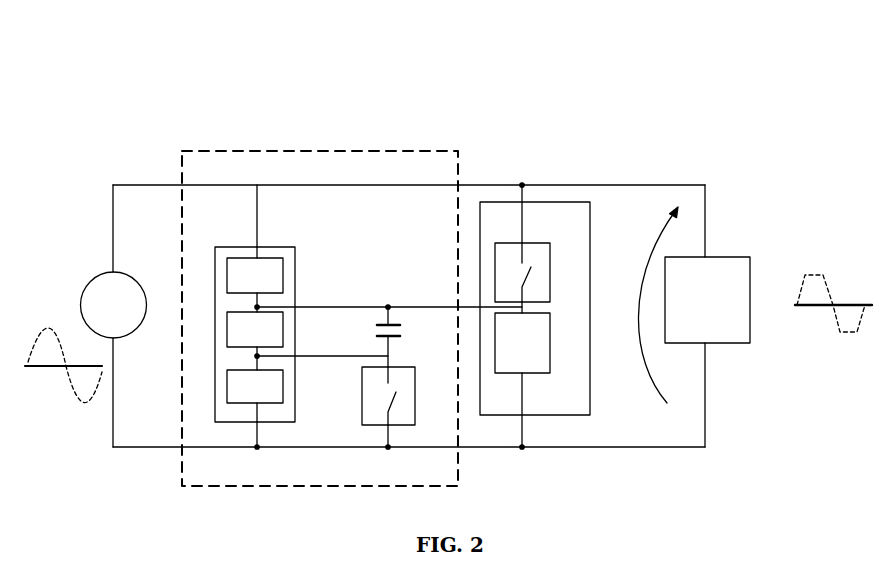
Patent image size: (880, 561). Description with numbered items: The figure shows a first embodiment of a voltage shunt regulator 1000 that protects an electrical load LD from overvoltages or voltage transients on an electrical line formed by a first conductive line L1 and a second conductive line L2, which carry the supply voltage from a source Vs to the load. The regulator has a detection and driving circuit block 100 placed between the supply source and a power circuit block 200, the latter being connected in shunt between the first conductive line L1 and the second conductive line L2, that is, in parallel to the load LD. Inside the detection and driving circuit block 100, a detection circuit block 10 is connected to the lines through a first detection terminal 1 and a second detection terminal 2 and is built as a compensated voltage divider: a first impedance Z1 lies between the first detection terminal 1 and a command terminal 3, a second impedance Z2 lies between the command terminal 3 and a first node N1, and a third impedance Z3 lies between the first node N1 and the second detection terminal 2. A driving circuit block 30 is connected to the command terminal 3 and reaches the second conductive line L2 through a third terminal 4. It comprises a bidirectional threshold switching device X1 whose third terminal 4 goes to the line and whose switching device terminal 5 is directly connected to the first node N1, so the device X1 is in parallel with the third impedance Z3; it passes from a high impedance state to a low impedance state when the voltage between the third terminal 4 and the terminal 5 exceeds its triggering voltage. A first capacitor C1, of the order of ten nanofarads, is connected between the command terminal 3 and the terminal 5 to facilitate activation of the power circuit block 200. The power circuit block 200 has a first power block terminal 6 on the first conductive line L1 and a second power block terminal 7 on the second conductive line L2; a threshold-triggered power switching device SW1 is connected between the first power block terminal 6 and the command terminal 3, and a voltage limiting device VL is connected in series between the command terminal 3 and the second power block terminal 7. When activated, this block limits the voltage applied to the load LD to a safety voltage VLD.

The voltage shunt regulator 1000 is at (546, 90).
The detection and driving circuit block 100 is at (247, 148).
The power circuit block 200 is at (592, 237).
The first detection terminal 1 is at (258, 197).
The second detection terminal 2 is at (260, 432).
The command terminal 3 is at (468, 306).
The third terminal 4 is at (390, 450).
The switching device terminal 5 is at (395, 357).
The first power block terminal 6 is at (524, 194).
The second power block terminal 7 is at (523, 428).
The detection circuit block 10 is at (284, 262).
The driving circuit block 30 is at (411, 227).
The first conductive line L1 is at (158, 183).
The second conductive line L2 is at (152, 449).
The AC voltage source Vs is at (97, 273).
The first impedance Z1 is at (255, 275).
The second impedance Z2 is at (255, 329).
The third impedance Z3 is at (255, 386).
The first node N1 is at (262, 358).
The first capacitor C1 is at (396, 318).
The threshold switching device X1 is at (417, 388).
The power switching device SW1 is at (551, 256).
The voltage limiting device VL is at (551, 357).
The electrical load LD is at (717, 255).
The safety voltage VLD is at (652, 377).